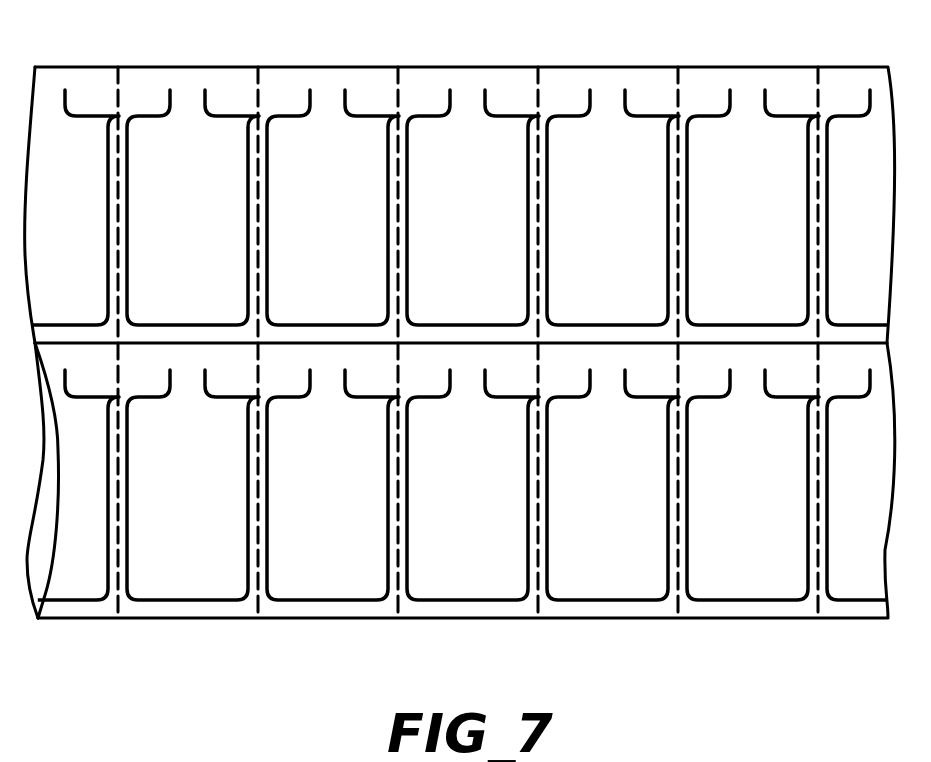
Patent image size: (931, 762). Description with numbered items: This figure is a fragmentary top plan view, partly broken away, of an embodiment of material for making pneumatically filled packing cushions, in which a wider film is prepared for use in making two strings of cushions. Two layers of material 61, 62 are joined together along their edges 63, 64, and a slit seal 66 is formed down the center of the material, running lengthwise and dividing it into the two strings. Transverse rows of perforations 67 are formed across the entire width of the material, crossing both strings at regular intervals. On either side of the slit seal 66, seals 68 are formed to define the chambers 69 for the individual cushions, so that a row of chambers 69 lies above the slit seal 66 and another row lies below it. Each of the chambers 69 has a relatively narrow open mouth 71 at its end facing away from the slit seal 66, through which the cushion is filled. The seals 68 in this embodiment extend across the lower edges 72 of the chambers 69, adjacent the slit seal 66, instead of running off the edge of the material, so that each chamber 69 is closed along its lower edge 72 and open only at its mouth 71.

The layer of material 61 is at (85, 97).
The layer of material 62 is at (42, 553).
The edge 63 is at (853, 615).
The edge 64 is at (855, 66).
The slit seal 66 is at (183, 345).
The transverse rows of perforations 67 is at (255, 94).
The seals 68 is at (807, 213).
The chambers 69 is at (628, 182).
The open mouths 71 is at (467, 100).
The lower edges of the chambers 72 is at (475, 325).